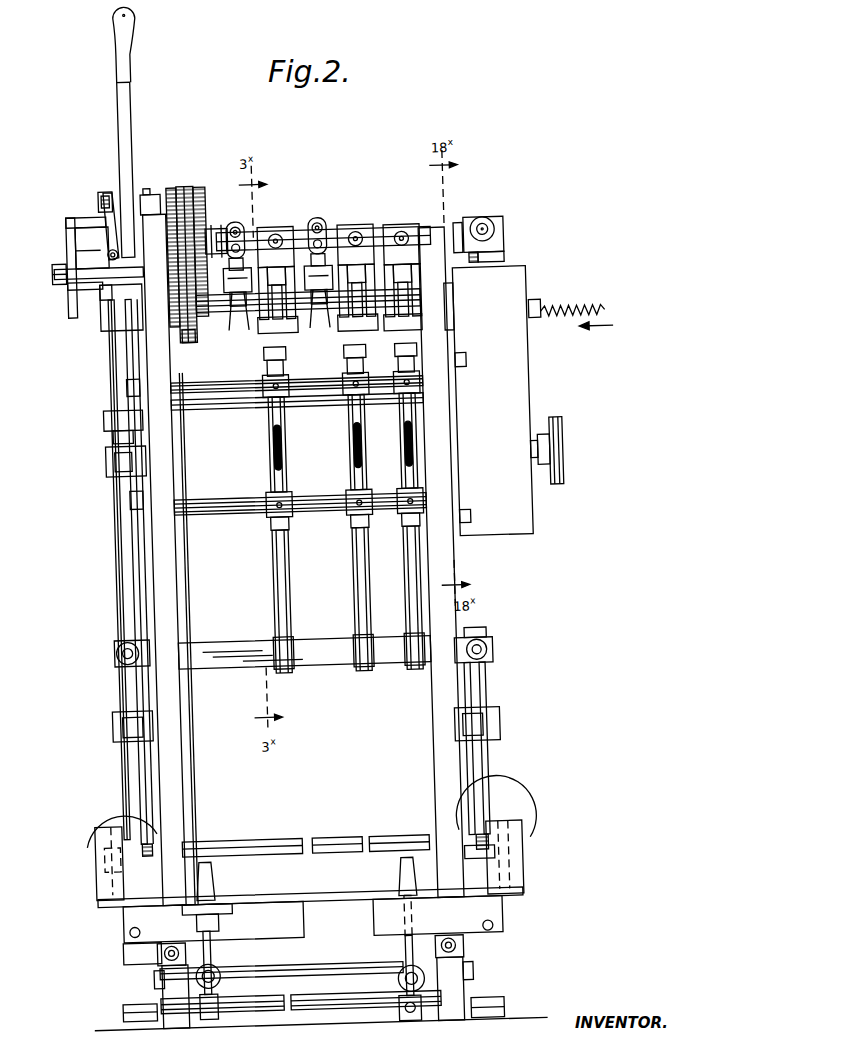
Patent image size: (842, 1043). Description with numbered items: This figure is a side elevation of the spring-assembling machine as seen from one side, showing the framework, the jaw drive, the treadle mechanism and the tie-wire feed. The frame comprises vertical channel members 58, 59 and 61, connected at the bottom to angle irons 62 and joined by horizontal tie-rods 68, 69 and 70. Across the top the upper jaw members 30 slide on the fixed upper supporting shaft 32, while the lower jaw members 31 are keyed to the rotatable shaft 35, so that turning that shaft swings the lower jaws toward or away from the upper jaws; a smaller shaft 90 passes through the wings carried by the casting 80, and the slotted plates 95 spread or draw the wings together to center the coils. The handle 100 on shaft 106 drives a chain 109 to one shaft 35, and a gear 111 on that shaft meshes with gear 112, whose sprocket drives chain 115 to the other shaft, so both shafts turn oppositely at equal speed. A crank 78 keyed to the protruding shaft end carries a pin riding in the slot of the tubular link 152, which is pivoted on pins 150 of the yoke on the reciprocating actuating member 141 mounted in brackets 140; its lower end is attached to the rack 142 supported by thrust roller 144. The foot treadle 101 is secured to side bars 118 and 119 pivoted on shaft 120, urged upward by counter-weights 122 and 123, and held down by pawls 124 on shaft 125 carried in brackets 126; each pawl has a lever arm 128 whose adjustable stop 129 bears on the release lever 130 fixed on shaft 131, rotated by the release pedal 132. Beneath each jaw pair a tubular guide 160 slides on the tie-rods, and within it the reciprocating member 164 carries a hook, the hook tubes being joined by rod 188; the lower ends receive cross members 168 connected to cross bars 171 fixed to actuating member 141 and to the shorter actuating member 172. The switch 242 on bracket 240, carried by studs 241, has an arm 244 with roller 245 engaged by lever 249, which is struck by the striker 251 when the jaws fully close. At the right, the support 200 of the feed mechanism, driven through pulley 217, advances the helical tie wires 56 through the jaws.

The handle 100 is at (145, 97).
The striker 251 is at (158, 180).
The short lever 249 is at (119, 182).
The roller 245 is at (115, 182).
The actuating arm 244 is at (109, 194).
The bracket 240 is at (78, 226).
The studs 241 is at (63, 262).
The switch 242 is at (78, 276).
The crank 78 is at (110, 305).
The tubular link 152 is at (117, 357).
The reciprocating actuating member 141 is at (133, 540).
The pins 150 is at (108, 412).
The brackets 140 is at (109, 450).
The cross bars 171 is at (112, 644).
The actuating member 172 is at (483, 693).
The counter-weight 122 is at (92, 792).
The counter-weight 123 is at (507, 788).
The thrust roller 144 is at (96, 848).
The rack 142 is at (90, 870).
The foot treadle 101 is at (513, 893).
The side bar 118 is at (113, 916).
The side bar 119 is at (492, 927).
The tie-rod 70 is at (112, 946).
The angle irons 62 is at (150, 990).
The brackets 126 is at (142, 968).
The shaft 125 is at (339, 971).
The shaft 131 is at (280, 998).
The lever arm 128 is at (207, 975).
The adjustable stop 129 is at (392, 967).
The release lever 130 is at (205, 1008).
The pawls 124 is at (204, 870).
The release pedal 132 is at (222, 900).
The shaft 120 is at (285, 851).
The channel member 59 is at (176, 586).
The channel member 58 is at (188, 541).
The channel member 61 is at (428, 754).
The tie-rod 68 is at (258, 376).
The rod 188 is at (252, 403).
The tie-rod 69 is at (250, 492).
The cross members 168 is at (228, 636).
The tubular guide 160 is at (352, 478).
The reciprocating members 164 is at (290, 573).
The chain 109 is at (184, 181).
The gear 112 is at (197, 179).
The chain 115 is at (212, 181).
The gear 111 is at (196, 335).
The upper supporting shaft 32 is at (300, 228).
The rotatable shaft 35 is at (242, 305).
The shaft 106 is at (232, 218).
The plates 95 is at (330, 302).
The shaft 90 is at (262, 227).
The lower jaw member 31 is at (268, 330).
The casting 80 is at (330, 221).
The upper jaw member 30 is at (383, 224).
The support 200 is at (530, 390).
The helical tie wires 56 is at (572, 318).
The pulley 217 is at (566, 440).